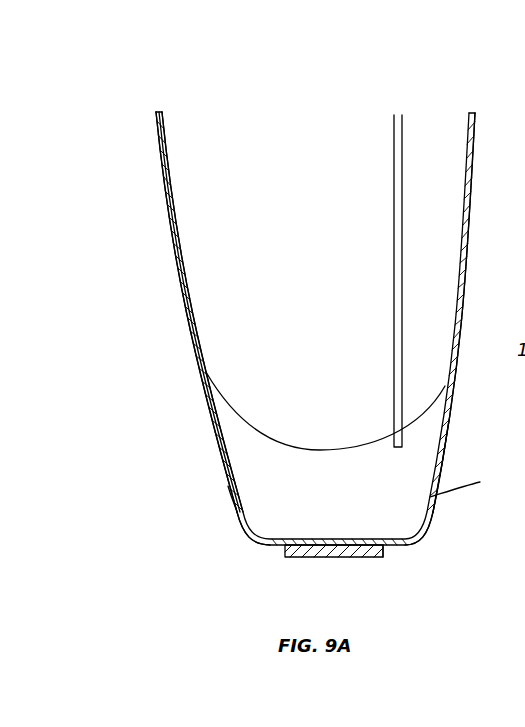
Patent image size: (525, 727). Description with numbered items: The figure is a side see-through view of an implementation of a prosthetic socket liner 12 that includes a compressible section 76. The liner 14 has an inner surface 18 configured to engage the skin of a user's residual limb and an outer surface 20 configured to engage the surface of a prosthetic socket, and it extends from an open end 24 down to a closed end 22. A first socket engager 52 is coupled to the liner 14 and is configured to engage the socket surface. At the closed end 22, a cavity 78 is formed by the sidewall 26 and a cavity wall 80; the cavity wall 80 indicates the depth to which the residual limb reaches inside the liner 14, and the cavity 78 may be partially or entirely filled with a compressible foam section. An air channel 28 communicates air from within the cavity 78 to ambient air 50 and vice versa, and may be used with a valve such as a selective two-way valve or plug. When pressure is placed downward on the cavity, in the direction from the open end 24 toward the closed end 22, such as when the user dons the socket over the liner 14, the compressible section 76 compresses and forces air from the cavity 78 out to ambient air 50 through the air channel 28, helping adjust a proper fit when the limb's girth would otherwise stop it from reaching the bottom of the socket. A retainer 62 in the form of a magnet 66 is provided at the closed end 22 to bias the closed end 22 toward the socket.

The prosthetic socket liner 12 is at (140, 228).
The liner 14 is at (158, 142).
The inner surface 18 is at (183, 278).
The outer surface 20 is at (182, 302).
The closed end 22 is at (234, 522).
The open end 24 is at (478, 123).
The sidewall 26 is at (170, 193).
The air channel 28 is at (394, 230).
The ambient air 50 is at (352, 80).
The first socket engager 52 is at (238, 498).
The retainer 62 is at (285, 556).
The magnet 66 is at (383, 548).
The compressible section 76 is at (442, 462).
The cavity 78 is at (408, 518).
The cavity wall 80 is at (305, 452).